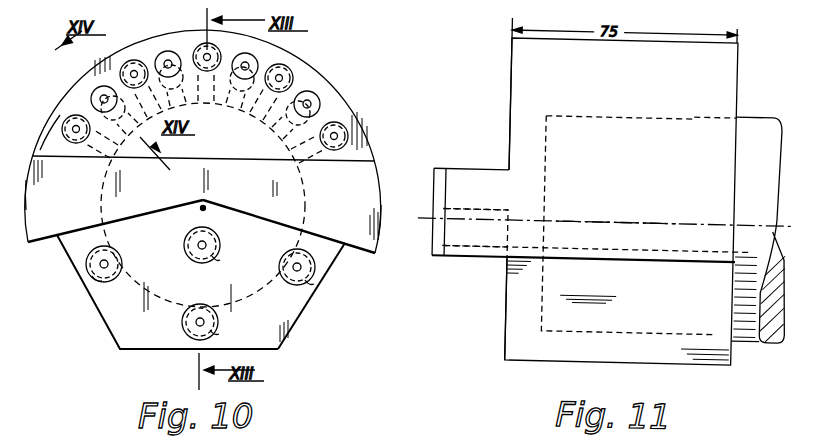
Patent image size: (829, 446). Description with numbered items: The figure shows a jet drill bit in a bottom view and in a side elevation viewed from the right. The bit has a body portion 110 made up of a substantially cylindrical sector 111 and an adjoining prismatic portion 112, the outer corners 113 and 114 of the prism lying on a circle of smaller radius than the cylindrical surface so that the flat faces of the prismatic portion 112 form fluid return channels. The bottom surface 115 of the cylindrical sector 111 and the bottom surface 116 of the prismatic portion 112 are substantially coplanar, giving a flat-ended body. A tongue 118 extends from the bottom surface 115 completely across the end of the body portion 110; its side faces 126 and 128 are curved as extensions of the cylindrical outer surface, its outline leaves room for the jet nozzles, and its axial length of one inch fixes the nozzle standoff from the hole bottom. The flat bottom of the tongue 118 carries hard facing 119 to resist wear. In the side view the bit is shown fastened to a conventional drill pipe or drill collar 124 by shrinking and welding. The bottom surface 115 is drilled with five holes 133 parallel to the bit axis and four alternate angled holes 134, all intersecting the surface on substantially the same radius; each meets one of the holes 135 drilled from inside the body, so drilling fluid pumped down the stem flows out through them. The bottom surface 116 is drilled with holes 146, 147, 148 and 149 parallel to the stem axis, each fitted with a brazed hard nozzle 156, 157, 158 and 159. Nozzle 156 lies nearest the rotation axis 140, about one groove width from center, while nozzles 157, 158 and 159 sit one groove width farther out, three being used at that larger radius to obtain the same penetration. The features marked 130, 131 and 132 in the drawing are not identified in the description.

In FIG. 11, the body portion 110 is at (527, 362).
In FIG. 10, the cylindrical sector 111 is at (356, 110).
In FIG. 10, the prismatic portion 112 is at (293, 327).
In FIG. 10, the outer corner 113 is at (118, 350).
In FIG. 10, the outer corner 114 is at (280, 351).
In FIG. 11, the bottom surface 115 is at (512, 70).
In FIG. 11, the bottom surface 116 is at (512, 306).
In FIG. 11, the tongue 118 is at (486, 250).
In FIG. 11, the hard facing 119 is at (437, 195).
In FIG. 11, the drill pipe or drill collar 124 is at (757, 328).
In FIG. 10, the side face 126 is at (25, 192).
In FIG. 10, the side face 128 is at (380, 225).
In FIG. 11, the side face 128 is at (485, 202).
In FIG. 10, the transverse face 130 is at (213, 160).
In FIG. 11, the transverse face 130 is at (486, 170).
In FIG. 10, the left inclined face 131 is at (130, 218).
In FIG. 10, the right inclined face 132 is at (268, 221).
In FIG. 10, the holes 133 is at (66, 120).
In FIG. 10, the angled holes 134 is at (93, 91).
In FIG. 10, the holes 135 is at (44, 144).
In FIG. 10, the rotation axis 140 is at (205, 206).
In FIG. 11, the rotation axis 140 is at (613, 218).
In FIG. 10, the hole 146 is at (185, 252).
In FIG. 10, the hole 147 is at (86, 265).
In FIG. 10, the hole 148 is at (183, 325).
In FIG. 10, the hole 149 is at (315, 267).
In FIG. 10, the nozzle 156 is at (218, 255).
In FIG. 10, the nozzle 157 is at (97, 278).
In FIG. 10, the nozzle 158 is at (218, 328).
In FIG. 10, the nozzle 159 is at (310, 283).